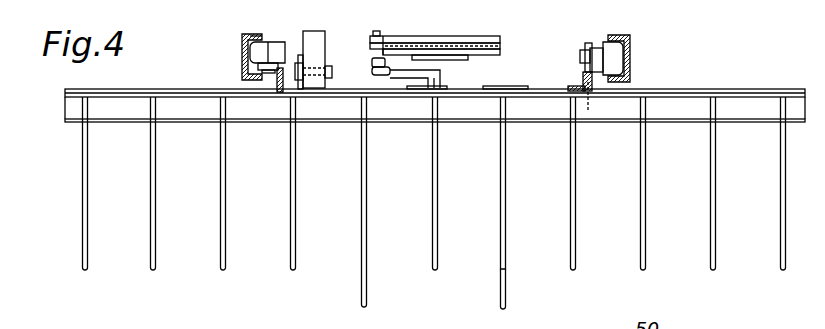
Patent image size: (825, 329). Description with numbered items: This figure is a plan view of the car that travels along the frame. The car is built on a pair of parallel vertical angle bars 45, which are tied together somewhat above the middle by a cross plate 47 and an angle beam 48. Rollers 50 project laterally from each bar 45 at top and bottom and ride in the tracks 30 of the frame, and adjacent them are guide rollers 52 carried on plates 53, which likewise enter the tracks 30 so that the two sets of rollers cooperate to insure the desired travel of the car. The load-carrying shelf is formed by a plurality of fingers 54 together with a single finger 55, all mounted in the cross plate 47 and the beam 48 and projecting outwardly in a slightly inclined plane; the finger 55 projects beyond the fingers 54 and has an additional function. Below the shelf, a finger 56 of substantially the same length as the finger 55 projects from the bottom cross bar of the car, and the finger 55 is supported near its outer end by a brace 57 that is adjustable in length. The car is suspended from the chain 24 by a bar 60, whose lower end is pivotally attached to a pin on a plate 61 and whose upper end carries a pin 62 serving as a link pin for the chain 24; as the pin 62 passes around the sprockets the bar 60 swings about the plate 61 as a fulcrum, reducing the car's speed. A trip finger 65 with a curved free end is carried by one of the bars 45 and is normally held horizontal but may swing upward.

The chain 24 is at (467, 36).
The tracks 30 is at (247, 52).
The vertical angle bars 45 is at (285, 83).
The plate 47 is at (678, 93).
The angle beam 48 is at (747, 103).
The rollers 50 is at (258, 53).
The guide rollers 52 is at (615, 58).
The plates 53 is at (590, 44).
The fingers 54 is at (156, 253).
The finger 55 is at (362, 250).
The finger 56 is at (507, 291).
The brace 57 is at (262, 38).
The bar 60 is at (385, 73).
The plate 61 is at (450, 89).
The pin 62 is at (380, 35).
The trip finger 65 is at (320, 40).